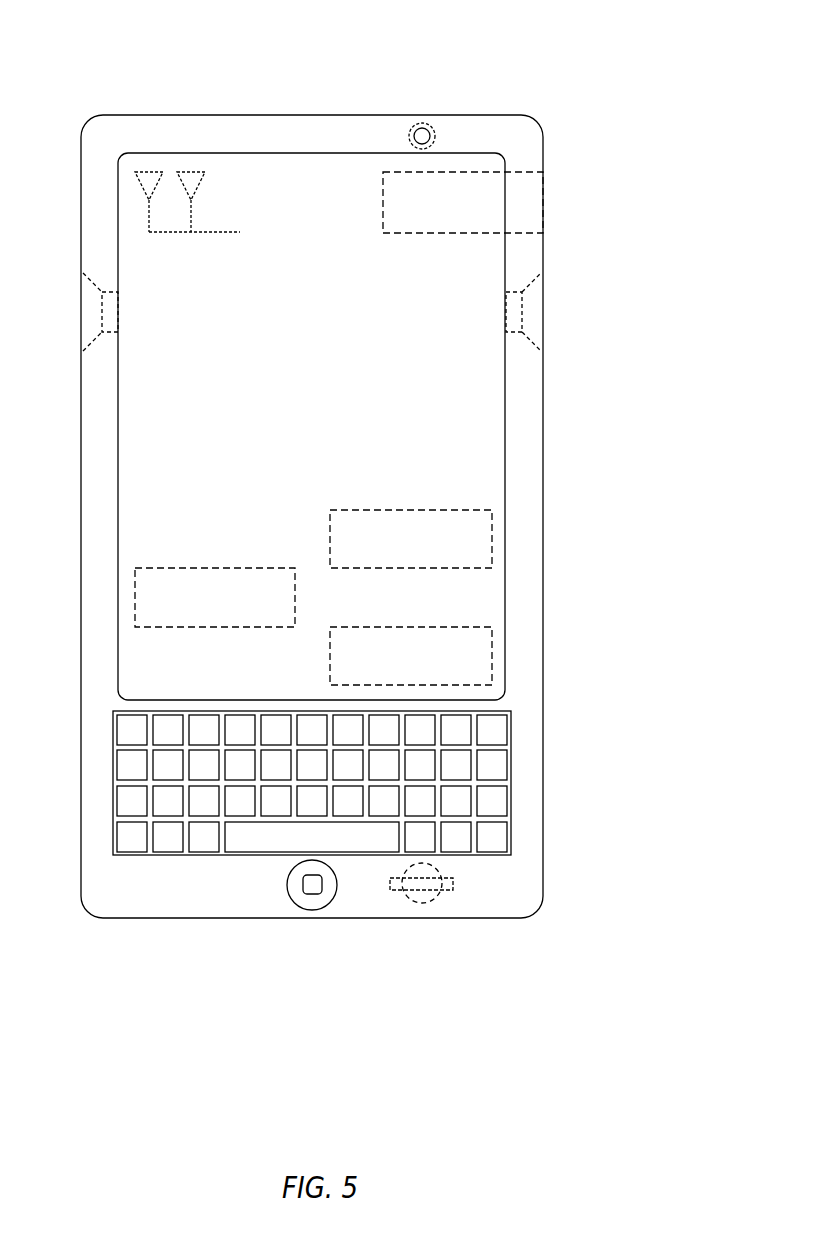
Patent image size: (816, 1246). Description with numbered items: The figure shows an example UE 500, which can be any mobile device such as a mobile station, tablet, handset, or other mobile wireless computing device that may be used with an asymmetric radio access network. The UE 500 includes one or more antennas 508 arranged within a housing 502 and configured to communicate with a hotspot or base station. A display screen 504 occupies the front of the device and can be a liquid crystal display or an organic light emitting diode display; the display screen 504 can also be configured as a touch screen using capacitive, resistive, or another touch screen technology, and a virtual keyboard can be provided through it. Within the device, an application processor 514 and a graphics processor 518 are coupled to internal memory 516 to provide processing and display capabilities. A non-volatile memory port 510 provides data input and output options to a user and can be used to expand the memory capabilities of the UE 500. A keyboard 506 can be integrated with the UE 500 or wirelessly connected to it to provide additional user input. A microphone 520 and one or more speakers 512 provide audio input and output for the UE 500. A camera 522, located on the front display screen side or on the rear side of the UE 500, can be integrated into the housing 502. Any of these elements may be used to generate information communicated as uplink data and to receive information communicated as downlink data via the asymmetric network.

The UE 500 is at (533, 53).
The housing 502 is at (312, 115).
The display screen 504 is at (485, 418).
The keyboard 506 is at (512, 783).
The antennas 508 is at (190, 172).
The non-volatile memory port 510 is at (545, 207).
The speakers 512 is at (90, 312).
The application processor 514 is at (413, 510).
The internal memory 516 is at (413, 627).
The graphics processor 518 is at (217, 568).
The microphone 520 is at (422, 903).
The camera 522 is at (432, 124).